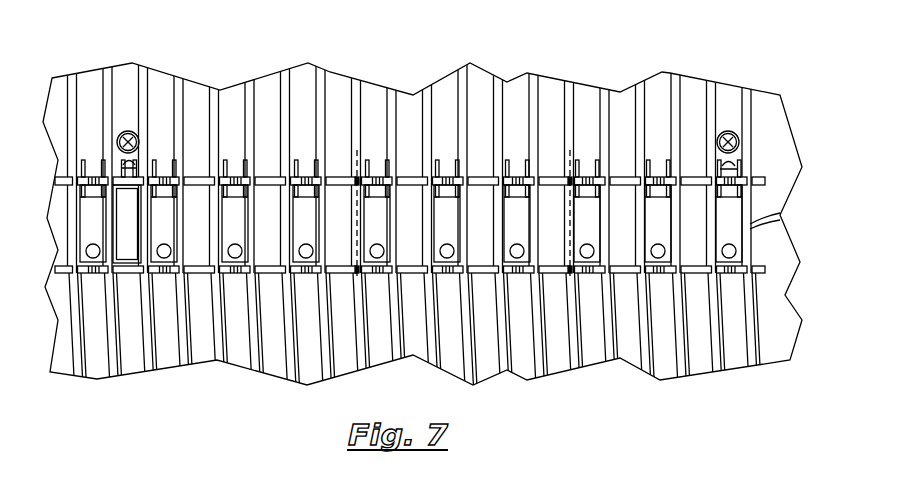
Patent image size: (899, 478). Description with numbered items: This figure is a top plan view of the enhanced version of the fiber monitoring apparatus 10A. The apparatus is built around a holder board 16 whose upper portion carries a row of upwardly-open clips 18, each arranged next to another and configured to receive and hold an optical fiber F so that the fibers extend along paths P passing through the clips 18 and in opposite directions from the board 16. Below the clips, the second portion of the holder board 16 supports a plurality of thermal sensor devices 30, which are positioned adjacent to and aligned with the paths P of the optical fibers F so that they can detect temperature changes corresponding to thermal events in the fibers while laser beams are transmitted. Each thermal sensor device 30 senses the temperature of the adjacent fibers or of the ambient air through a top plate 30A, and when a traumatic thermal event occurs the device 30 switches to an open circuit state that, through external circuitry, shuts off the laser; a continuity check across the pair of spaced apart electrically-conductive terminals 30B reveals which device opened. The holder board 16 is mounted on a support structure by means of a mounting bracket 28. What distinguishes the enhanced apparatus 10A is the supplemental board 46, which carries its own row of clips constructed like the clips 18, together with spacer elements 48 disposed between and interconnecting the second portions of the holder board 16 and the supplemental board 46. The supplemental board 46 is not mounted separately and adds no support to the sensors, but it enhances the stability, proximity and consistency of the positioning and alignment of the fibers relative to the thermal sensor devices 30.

The enhanced fiber monitoring apparatus 10A is at (768, 152).
The holder board 16 is at (757, 183).
The upwardly-open clips 18 is at (247, 178).
The mounting bracket 28 is at (129, 131).
The thermal sensor device 30 is at (510, 212).
The top plate 30A is at (452, 232).
The electrically-conductive terminals 30B is at (457, 167).
The supplemental board 46 is at (272, 270).
The spacer elements 48 is at (130, 228).
The optical fiber F is at (392, 112).
The path P is at (357, 279).